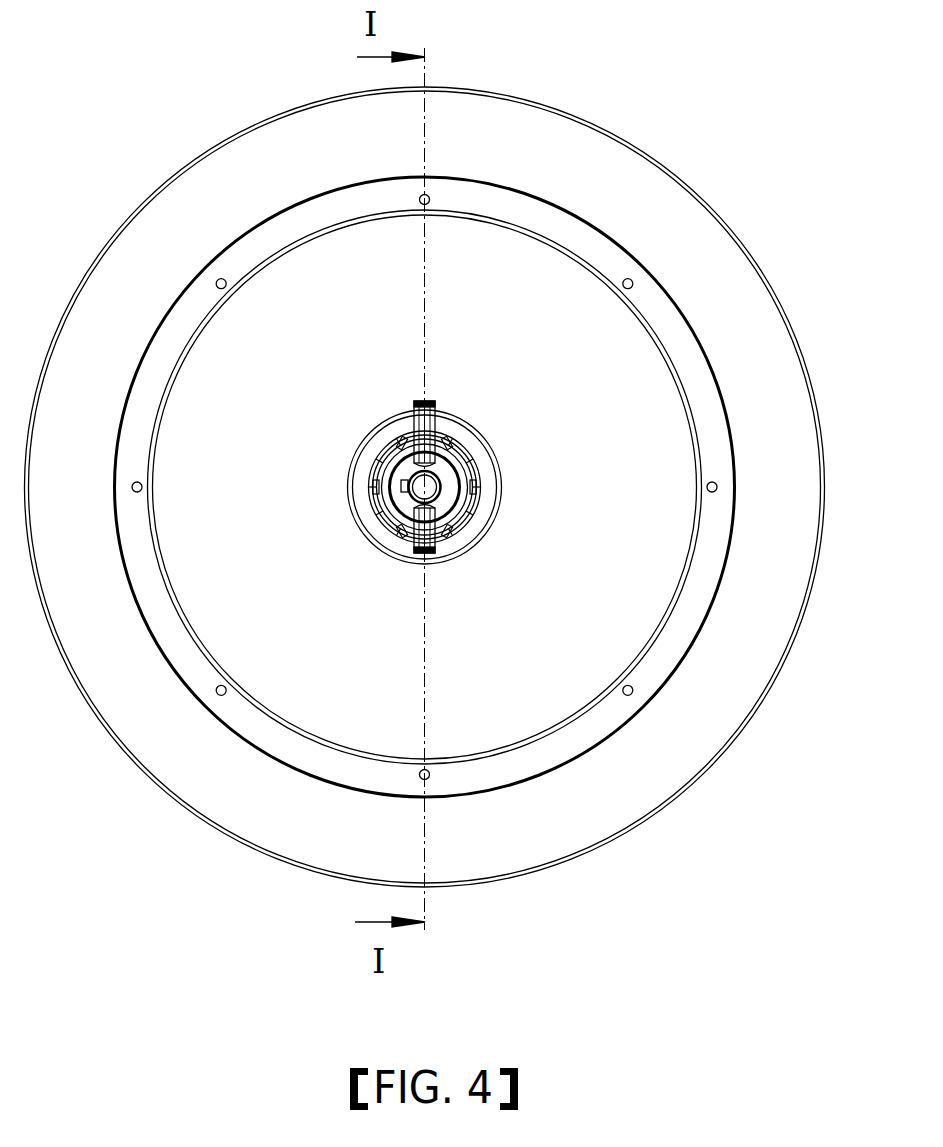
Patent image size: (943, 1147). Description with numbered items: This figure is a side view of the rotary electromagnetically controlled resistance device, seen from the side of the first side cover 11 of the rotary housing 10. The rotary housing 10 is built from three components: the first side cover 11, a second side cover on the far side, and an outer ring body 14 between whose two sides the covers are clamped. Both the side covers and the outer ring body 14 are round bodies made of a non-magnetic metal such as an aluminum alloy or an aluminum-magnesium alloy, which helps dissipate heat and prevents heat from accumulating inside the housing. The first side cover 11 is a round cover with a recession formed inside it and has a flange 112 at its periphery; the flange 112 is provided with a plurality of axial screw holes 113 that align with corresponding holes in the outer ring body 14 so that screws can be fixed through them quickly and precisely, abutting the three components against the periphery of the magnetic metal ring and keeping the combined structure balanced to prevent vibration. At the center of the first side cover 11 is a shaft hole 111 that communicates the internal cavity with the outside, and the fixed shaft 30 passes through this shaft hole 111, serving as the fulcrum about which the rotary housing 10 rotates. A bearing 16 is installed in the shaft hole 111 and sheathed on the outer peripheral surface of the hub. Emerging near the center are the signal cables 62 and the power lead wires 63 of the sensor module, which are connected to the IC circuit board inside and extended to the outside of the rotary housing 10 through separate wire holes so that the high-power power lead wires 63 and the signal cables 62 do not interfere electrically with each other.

The rotary housing 10 is at (160, 187).
The outer ring body 14 is at (282, 130).
The first side cover 11 is at (523, 283).
The flange 112 is at (660, 308).
The axial screw holes 113 is at (631, 279).
The shaft hole 111 is at (477, 457).
The bearing 16 is at (380, 463).
The fixed shaft 30 is at (417, 490).
The power lead wires 63 is at (414, 407).
The signal cables 62 is at (415, 542).